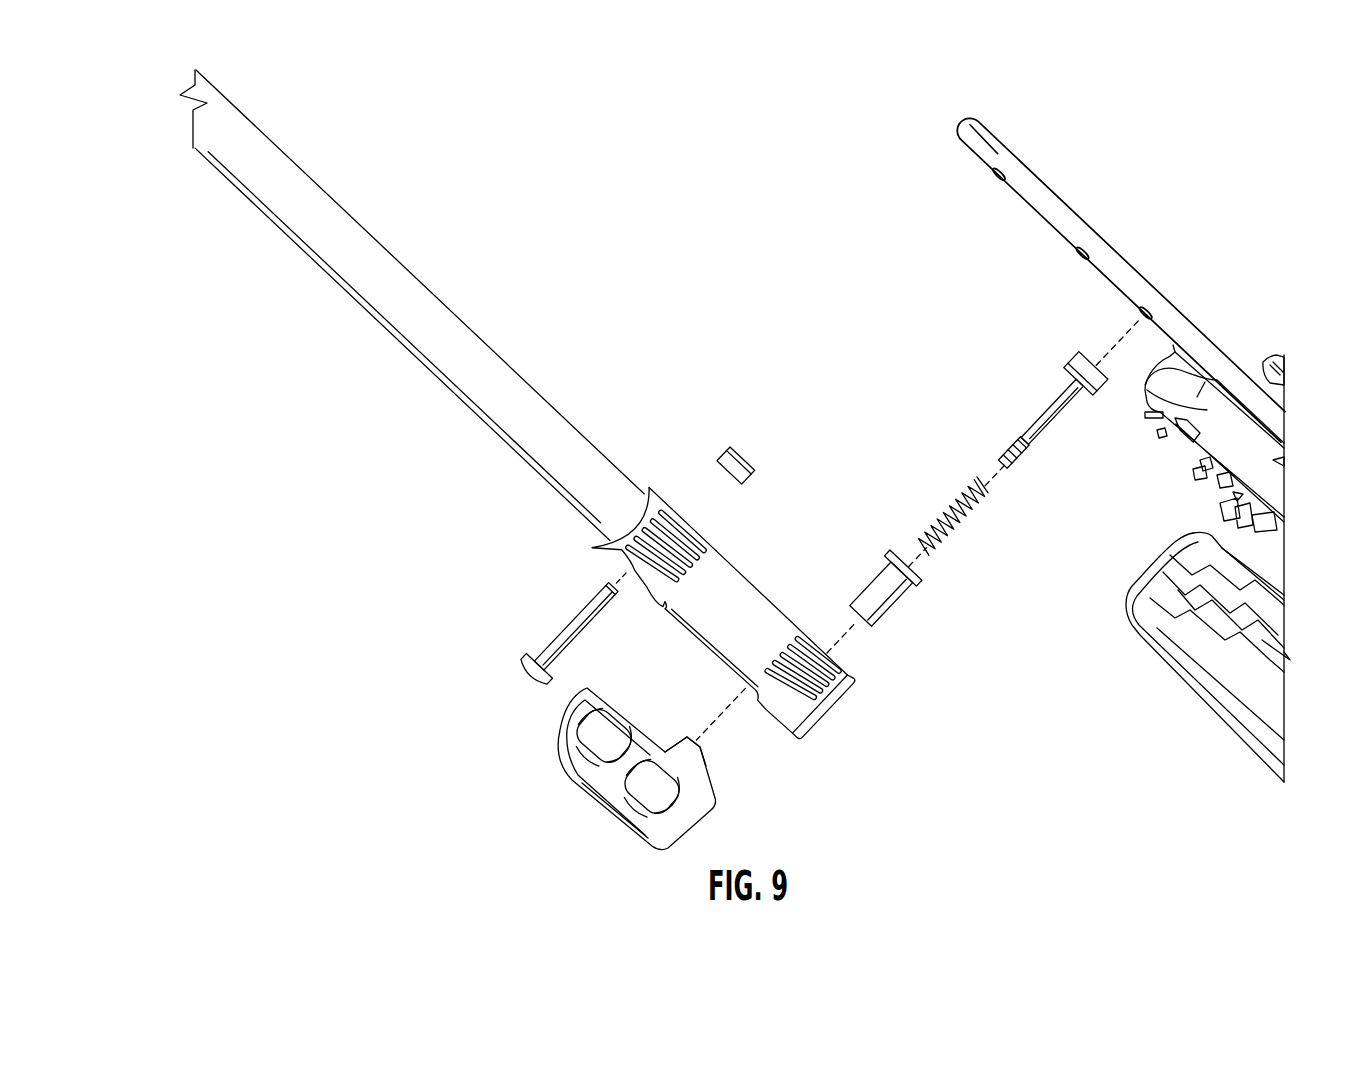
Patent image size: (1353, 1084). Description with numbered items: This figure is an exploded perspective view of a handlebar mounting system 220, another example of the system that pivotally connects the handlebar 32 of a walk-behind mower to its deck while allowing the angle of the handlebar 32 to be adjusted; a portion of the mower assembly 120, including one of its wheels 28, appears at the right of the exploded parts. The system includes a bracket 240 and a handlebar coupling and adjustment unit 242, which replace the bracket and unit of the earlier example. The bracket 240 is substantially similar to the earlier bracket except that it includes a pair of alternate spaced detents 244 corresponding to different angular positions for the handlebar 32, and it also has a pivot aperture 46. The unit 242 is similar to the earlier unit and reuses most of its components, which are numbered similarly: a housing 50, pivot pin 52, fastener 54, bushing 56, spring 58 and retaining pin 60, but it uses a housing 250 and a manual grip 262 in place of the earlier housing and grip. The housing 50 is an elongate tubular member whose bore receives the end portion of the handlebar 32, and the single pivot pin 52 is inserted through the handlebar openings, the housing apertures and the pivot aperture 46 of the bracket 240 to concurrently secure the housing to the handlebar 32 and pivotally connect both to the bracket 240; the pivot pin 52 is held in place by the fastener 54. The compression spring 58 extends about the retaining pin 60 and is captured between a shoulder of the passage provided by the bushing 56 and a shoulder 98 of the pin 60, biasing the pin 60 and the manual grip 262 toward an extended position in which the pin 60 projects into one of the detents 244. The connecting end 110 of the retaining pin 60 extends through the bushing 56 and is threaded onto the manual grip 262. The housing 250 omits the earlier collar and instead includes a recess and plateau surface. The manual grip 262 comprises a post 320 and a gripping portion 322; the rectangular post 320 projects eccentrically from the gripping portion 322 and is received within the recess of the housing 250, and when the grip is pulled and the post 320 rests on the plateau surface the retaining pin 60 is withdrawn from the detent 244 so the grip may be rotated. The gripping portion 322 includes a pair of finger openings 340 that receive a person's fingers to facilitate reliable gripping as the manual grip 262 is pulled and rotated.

The handlebar mounting system 220 is at (200, 243).
The handlebar 32 is at (548, 403).
The handlebar coupling and adjustment unit 242 is at (663, 493).
The housing 50 is at (755, 587).
The housing 250 is at (798, 742).
The fastener 54 is at (750, 473).
The bushing 56 is at (866, 588).
The spring 58 is at (940, 524).
The connecting end 110 is at (1010, 446).
The retaining pin 60 is at (1031, 420).
The shoulder 98 is at (1064, 388).
The pivot pin 52 is at (540, 652).
The manual grip 262 is at (648, 842).
The gripping portion 322 is at (597, 812).
The finger openings 340 is at (585, 731).
The post 320 is at (699, 752).
The bracket 240 is at (1062, 211).
The pivot aperture 46 is at (1080, 256).
The detents 244 is at (1150, 317).
The handle assembly 120 is at (1249, 264).
The wheels 28 is at (1157, 660).